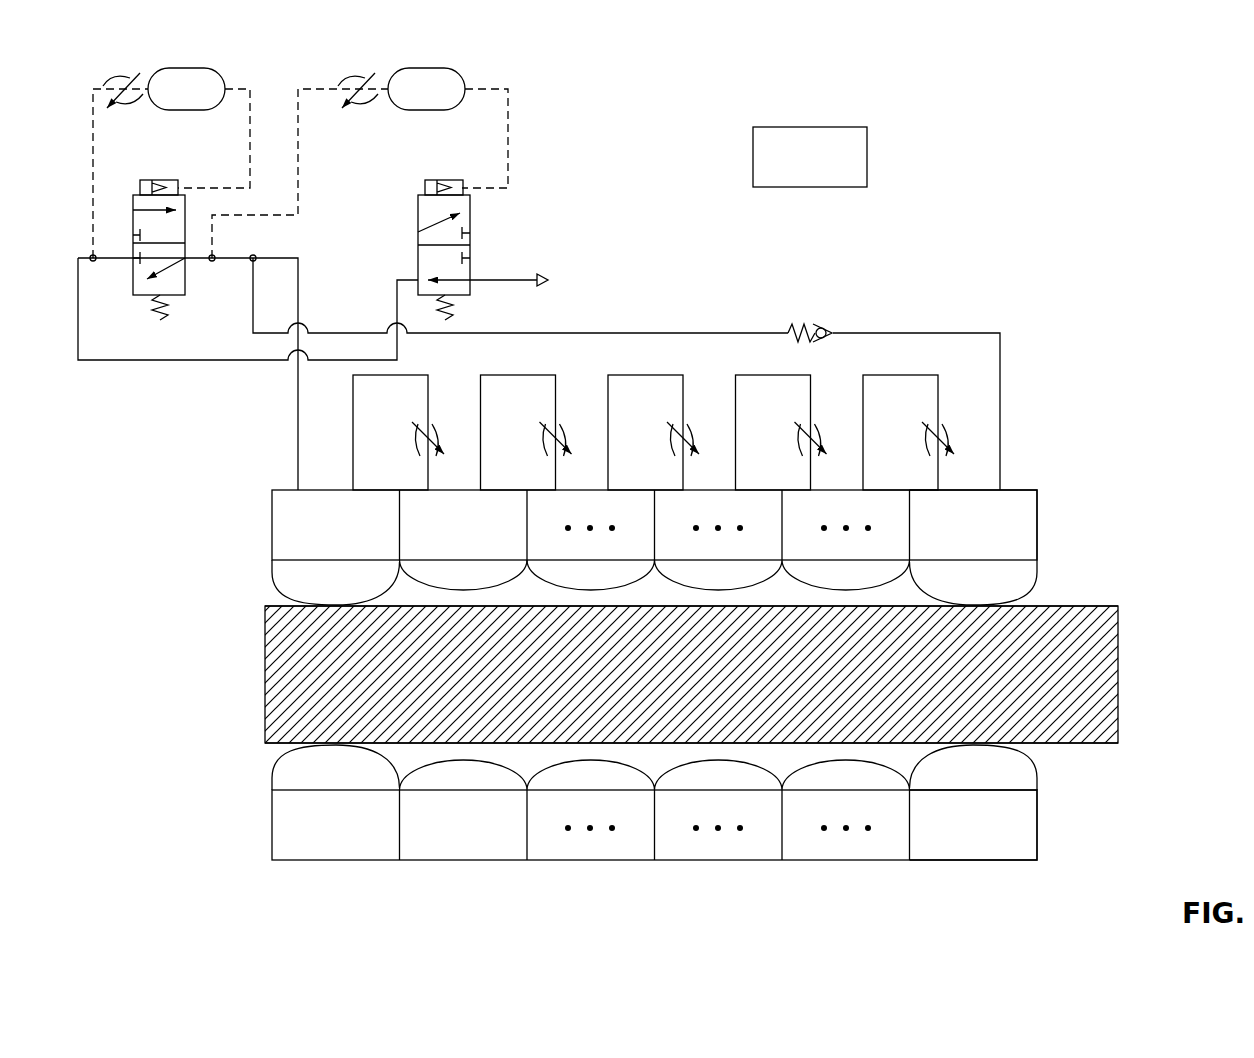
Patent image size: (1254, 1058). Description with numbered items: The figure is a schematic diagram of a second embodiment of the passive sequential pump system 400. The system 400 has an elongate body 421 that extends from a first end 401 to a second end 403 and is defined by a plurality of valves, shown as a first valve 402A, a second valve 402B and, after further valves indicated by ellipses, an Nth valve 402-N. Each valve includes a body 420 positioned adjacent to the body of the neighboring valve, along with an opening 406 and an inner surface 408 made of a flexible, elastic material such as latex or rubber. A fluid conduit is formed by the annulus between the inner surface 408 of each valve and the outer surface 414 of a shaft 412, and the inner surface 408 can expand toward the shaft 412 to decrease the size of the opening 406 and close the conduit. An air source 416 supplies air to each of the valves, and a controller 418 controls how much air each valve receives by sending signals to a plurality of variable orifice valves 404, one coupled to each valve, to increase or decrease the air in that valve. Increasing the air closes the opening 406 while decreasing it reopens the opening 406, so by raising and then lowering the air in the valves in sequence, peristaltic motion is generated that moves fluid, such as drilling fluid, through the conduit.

The passive sequential pump system 400 is at (1134, 51).
The first end 401 is at (260, 577).
The first valve 402A is at (365, 541).
The second valve 402B is at (492, 541).
The Nth valve 402-N is at (1000, 541).
The second end 403 is at (1050, 565).
The variable orifice valve 404 is at (432, 430).
The opening 406 is at (1050, 592).
The inner surface 408 is at (285, 600).
The shaft 412 is at (264, 710).
The outer surface 414 is at (270, 746).
The air source 416 is at (205, 68).
The controller 418 is at (832, 171).
The body 420 is at (1027, 806).
The elongate body 421 is at (492, 841).